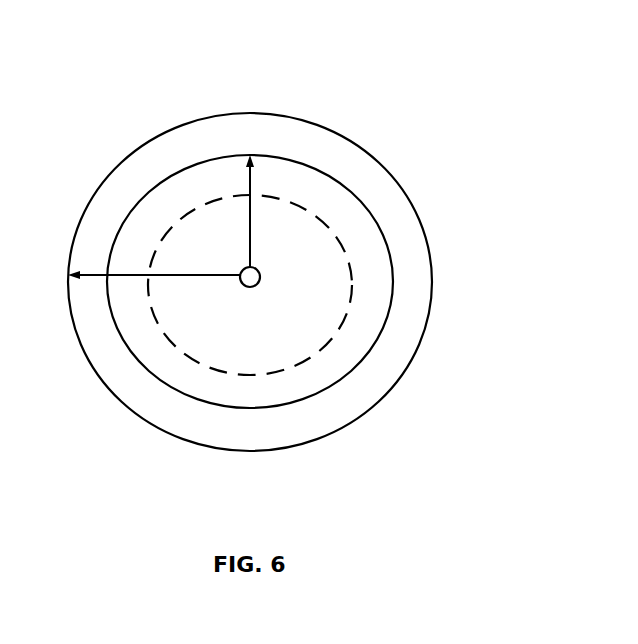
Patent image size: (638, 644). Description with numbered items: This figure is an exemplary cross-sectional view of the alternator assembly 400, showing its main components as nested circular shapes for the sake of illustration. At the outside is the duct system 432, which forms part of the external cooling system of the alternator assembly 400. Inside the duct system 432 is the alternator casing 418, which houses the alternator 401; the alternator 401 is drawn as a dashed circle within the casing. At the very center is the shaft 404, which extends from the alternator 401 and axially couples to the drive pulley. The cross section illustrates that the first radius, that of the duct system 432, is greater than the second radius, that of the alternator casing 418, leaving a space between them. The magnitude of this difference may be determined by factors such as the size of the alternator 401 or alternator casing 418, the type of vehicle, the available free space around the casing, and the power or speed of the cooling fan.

The alternator assembly 400 is at (146, 66).
The duct system 432 is at (348, 138).
The alternator casing 418 is at (392, 268).
The alternator 401 is at (160, 333).
The shaft 404 is at (252, 288).